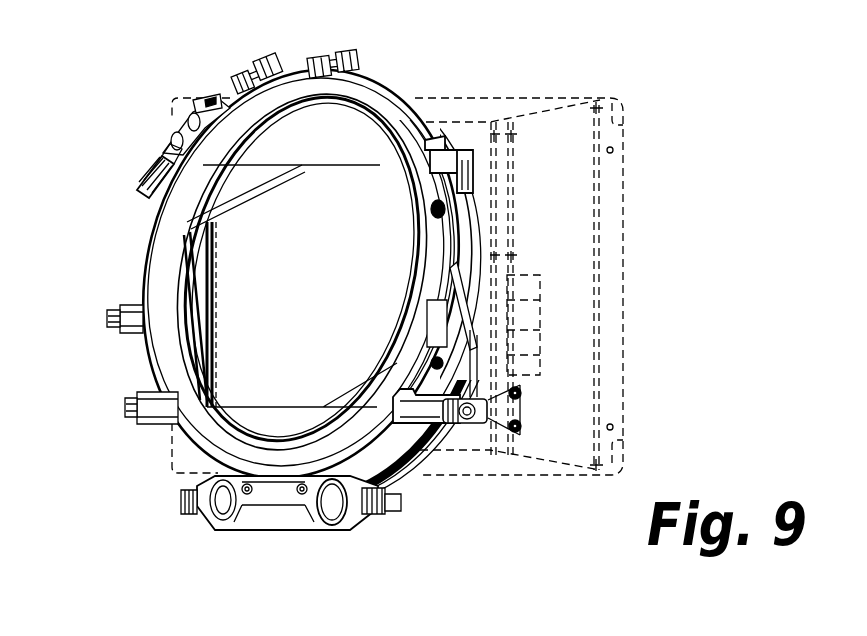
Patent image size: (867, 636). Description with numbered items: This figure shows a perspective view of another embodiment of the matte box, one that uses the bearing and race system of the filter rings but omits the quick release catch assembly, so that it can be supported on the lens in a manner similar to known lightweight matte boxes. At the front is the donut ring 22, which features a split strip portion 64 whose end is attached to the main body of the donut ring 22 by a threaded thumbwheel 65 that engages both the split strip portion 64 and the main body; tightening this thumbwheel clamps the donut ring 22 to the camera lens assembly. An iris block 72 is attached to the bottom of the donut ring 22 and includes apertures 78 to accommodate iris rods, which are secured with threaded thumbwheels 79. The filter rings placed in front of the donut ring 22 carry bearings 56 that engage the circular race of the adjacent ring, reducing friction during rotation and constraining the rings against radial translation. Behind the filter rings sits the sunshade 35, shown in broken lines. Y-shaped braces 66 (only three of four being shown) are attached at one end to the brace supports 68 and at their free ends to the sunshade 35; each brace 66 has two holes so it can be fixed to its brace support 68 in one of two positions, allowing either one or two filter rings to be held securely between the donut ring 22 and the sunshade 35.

The donut ring 22 is at (152, 250).
The sun shade 35 is at (568, 202).
The bearings 56 is at (432, 210).
The split strip portion 64 is at (223, 100).
The threaded thumbwheel 65 is at (145, 172).
The Y-shaped braces 66 is at (107, 315).
The brace support 68 is at (133, 327).
The iris block 72 is at (267, 495).
The apertures 78 is at (330, 509).
The threaded thumbwheels 79 is at (382, 519).